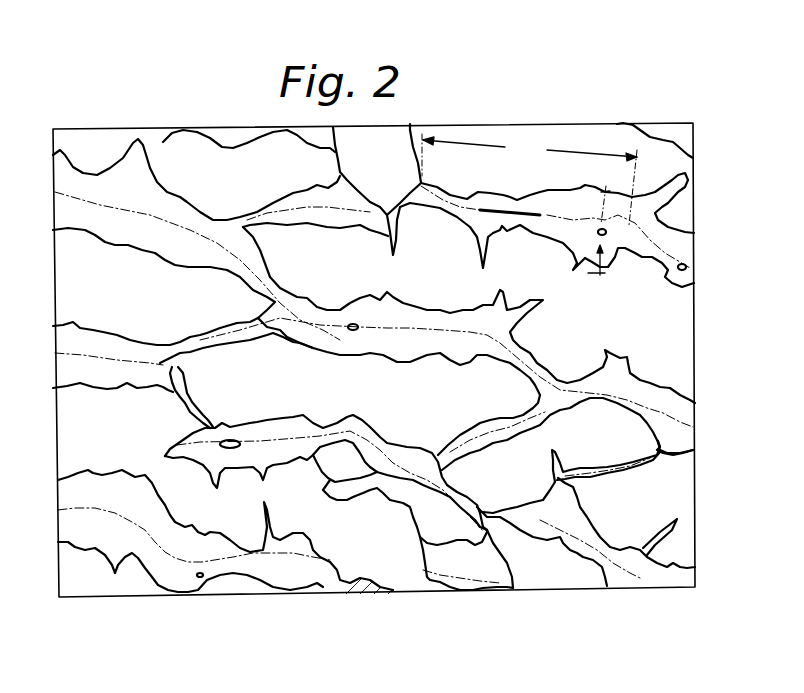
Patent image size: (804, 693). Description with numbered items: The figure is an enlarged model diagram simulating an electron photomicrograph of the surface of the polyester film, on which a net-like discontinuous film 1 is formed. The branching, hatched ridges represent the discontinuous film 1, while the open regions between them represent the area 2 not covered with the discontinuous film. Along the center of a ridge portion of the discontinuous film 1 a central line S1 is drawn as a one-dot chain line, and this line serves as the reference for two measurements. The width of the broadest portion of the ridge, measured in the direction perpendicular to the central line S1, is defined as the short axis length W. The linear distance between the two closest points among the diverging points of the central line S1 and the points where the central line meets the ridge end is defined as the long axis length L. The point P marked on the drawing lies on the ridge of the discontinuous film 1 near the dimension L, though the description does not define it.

The discontinuous film 1 is at (630, 588).
The area not covered with the discontinuous film 2 is at (547, 589).
The central line S1 is at (418, 182).
The long axis length L is at (529, 179).
The pitch P is at (539, 208).
The short axis length W is at (597, 274).